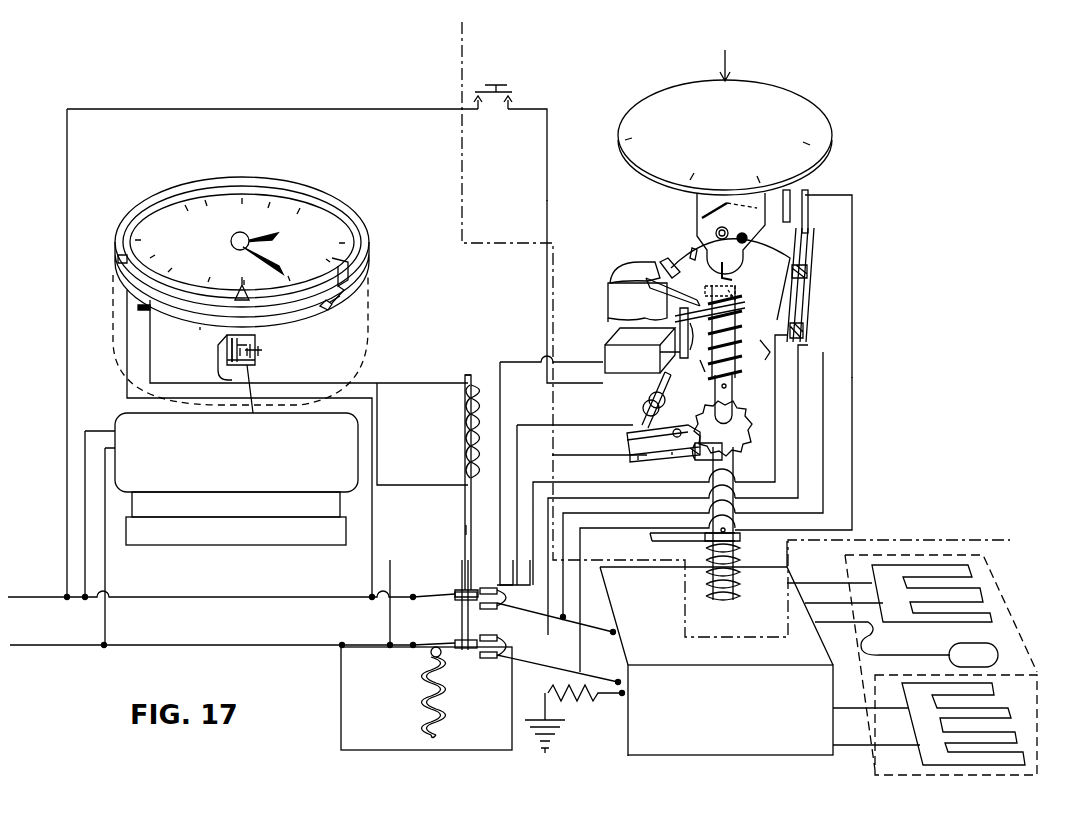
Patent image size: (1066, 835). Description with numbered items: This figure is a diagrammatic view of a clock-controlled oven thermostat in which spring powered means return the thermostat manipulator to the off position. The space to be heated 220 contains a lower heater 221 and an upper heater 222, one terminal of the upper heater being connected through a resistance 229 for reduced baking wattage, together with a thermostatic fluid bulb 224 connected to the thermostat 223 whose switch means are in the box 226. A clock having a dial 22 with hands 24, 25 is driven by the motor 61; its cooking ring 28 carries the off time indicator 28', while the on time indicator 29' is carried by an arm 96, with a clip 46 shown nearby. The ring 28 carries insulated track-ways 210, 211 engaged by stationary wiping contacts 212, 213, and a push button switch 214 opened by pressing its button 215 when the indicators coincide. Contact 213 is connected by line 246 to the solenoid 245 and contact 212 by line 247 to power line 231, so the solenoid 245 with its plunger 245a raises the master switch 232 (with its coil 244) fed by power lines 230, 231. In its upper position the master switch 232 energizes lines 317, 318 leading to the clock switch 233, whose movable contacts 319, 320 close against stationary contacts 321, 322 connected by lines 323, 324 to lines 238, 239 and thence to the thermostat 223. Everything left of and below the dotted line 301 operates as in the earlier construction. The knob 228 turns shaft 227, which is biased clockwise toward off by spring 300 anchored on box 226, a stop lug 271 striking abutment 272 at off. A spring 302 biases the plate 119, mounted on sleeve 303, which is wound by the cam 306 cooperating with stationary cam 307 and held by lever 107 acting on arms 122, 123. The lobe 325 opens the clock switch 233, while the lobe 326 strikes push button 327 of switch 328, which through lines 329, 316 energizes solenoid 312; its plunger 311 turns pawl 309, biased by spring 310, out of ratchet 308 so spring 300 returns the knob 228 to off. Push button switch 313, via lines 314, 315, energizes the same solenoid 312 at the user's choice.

The dial 22 is at (187, 200).
The hour hand 24 is at (272, 232).
The minute hand 25 is at (275, 262).
The cooking ring 28 is at (229, 291).
The off time indicator 28' is at (222, 268).
The on time indicator 29' is at (371, 260).
The clip 46 is at (336, 323).
The motor 61 is at (240, 533).
The arm 96 is at (318, 322).
The lever 107 is at (612, 284).
The plate 119 is at (752, 240).
The arm 122 is at (662, 246).
The arm 123 is at (663, 262).
The track-way 210 is at (188, 308).
The track-way 211 is at (201, 326).
The wiping contact 212 is at (115, 262).
The wiping contact 213 is at (138, 308).
The push button switch 214 is at (253, 414).
The push button 215 is at (258, 352).
The space to be heated 220 is at (985, 588).
The lower heater 221 is at (1012, 700).
The upper heater 222 is at (965, 618).
The thermostat 223 is at (716, 648).
The bulb 224 is at (990, 652).
The box 226 is at (628, 752).
The shaft 227 is at (735, 452).
The knob 228 is at (752, 85).
The resistance 229 is at (560, 740).
The power line 230 is at (32, 645).
The power line 231 is at (20, 597).
The master switch 232 is at (460, 609).
The clock switch 233 is at (800, 298).
The line 238 is at (583, 622).
The line 239 is at (546, 673).
The relay coil 244 is at (430, 695).
The solenoid 245 is at (462, 462).
The plunger 245a is at (466, 530).
The line 246 is at (430, 383).
The line 247 is at (378, 420).
The stop lug 271 is at (741, 540).
The abutment 272 is at (660, 542).
The spring 300 is at (742, 584).
The dotted line 301 is at (463, 158).
The spring 302 is at (738, 378).
The sleeve 303 is at (735, 288).
The cam 306 is at (700, 204).
The stationary cam 307 is at (710, 214).
The ratchet 308 is at (706, 420).
The pawl 309 is at (583, 452).
The spring 310 is at (672, 456).
The solenoid plunger 311 is at (662, 390).
The solenoid 312 is at (642, 438).
The push button switch 313 is at (512, 91).
The line 314 is at (357, 108).
The line 315 is at (548, 201).
The line 316 is at (605, 420).
The line 317 is at (595, 480).
The line 318 is at (640, 462).
The movable contact 319 is at (812, 243).
The movable contact 320 is at (810, 268).
The stationary contact 321 is at (795, 195).
The stationary contact 322 is at (810, 213).
The line 323 is at (824, 352).
The line 324 is at (852, 378).
The lobe 325 is at (790, 268).
The lobe 326 is at (760, 355).
The push button 327 is at (695, 369).
The push button switch 328 is at (612, 343).
The line 329 is at (500, 362).